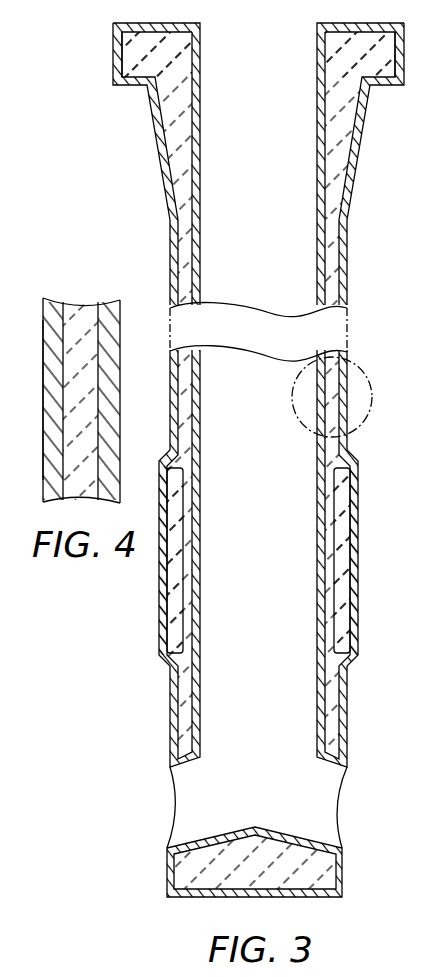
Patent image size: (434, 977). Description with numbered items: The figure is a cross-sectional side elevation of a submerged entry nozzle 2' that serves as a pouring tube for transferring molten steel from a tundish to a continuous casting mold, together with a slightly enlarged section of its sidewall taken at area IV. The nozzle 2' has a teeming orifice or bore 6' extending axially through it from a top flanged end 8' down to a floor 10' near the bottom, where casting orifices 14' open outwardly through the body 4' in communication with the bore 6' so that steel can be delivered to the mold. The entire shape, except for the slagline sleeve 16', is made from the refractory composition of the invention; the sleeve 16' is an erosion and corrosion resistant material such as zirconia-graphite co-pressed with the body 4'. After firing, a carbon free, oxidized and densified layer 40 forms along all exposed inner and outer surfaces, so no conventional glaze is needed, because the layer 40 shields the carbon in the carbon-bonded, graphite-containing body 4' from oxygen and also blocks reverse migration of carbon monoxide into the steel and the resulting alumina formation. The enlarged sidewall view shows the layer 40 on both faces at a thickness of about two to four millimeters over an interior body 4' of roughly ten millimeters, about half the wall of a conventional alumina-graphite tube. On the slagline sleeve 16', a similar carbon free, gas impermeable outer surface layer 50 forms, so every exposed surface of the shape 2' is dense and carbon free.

In FIG. 3, the continuous casting nozzle 2' is at (229, 477).
In FIG. 4, the continuous casting nozzle 2' is at (82, 368).
In FIG. 3, the body 4' is at (258, 452).
In FIG. 4, the body 4' is at (80, 382).
In FIG. 3, the bore 6' is at (258, 320).
In FIG. 4, the bore 6' is at (30, 394).
In FIG. 3, the top flanged end 8' is at (231, 54).
In FIG. 3, the floor 10' is at (255, 834).
In FIG. 3, the casting orifice 14' is at (235, 807).
In FIG. 3, the slagline sleeve 16' is at (264, 560).
In FIG. 3, the carbon free, oxidized and densified layer 40 is at (118, 23).
In FIG. 4, the carbon free, oxidized and densified layer 40 is at (50, 427).
In FIG. 3, the outer surface layer 50 is at (160, 633).
In FIG. 3, the section area IV— IV is at (365, 373).